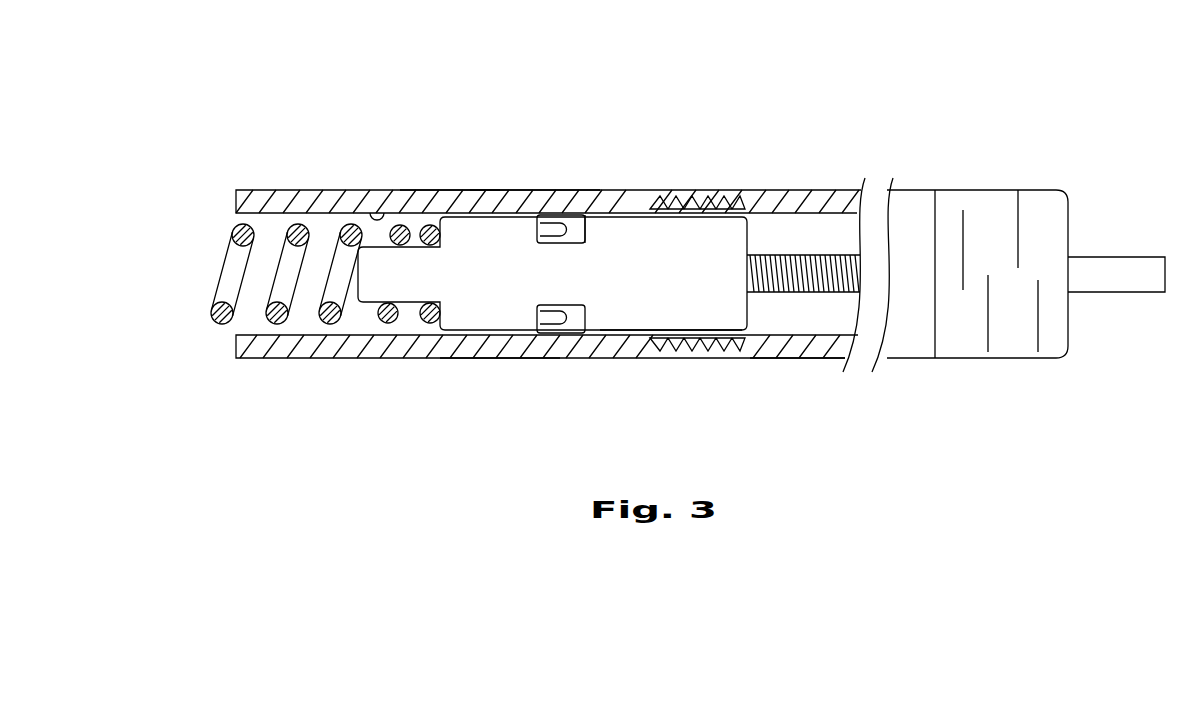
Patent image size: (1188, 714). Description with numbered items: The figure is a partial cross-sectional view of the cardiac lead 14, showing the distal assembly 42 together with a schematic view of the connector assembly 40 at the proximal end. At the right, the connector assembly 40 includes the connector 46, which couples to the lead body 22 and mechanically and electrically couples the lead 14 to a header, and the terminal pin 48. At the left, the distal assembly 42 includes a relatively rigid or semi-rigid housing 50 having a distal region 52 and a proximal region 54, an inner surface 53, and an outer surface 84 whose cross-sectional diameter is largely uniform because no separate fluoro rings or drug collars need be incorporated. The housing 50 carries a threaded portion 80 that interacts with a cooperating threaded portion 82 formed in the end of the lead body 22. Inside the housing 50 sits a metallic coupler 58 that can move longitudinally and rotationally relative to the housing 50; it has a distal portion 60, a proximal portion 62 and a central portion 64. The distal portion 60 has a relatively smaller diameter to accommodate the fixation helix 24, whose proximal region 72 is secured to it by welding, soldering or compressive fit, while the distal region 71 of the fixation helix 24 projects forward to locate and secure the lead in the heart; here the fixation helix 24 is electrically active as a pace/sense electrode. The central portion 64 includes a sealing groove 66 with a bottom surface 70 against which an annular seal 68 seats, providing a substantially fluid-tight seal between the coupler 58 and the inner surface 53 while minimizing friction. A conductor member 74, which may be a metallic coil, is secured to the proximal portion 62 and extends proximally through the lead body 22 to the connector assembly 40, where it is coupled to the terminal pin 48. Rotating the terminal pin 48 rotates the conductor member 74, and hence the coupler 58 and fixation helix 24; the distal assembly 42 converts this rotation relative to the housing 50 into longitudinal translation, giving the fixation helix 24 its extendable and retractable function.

The cardiac lead 14 is at (545, 83).
The lead body 22 is at (910, 343).
The fixation helix 24 is at (337, 287).
The connector assembly 40 is at (993, 165).
The distal assembly 42 is at (335, 110).
The connector 46 is at (1015, 342).
The terminal pin 48 is at (1118, 282).
The housing 50 is at (525, 190).
The distal region 52 is at (337, 383).
The inner surface 53 is at (382, 213).
The proximal region 54 is at (790, 382).
The coupler 58 is at (568, 292).
The distal portion 60 is at (412, 293).
The proximal portion 62 is at (678, 317).
The central portion 64 is at (568, 272).
The sealing groove 66 is at (583, 215).
The annular seal 68 is at (570, 217).
The bottom surface 70 is at (563, 250).
The distal region 71 is at (202, 270).
The proximal region 72 is at (463, 188).
The conductor member 74 is at (810, 270).
The threaded portion 80 is at (658, 197).
The cooperating threaded portion 82 is at (727, 190).
The outer surface 84 is at (495, 358).